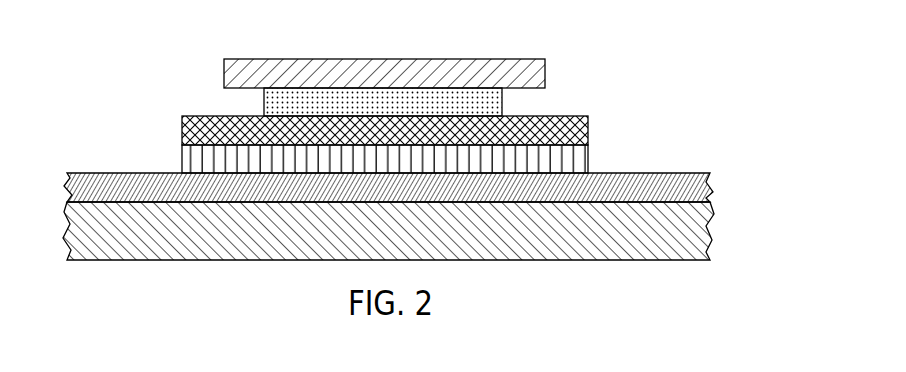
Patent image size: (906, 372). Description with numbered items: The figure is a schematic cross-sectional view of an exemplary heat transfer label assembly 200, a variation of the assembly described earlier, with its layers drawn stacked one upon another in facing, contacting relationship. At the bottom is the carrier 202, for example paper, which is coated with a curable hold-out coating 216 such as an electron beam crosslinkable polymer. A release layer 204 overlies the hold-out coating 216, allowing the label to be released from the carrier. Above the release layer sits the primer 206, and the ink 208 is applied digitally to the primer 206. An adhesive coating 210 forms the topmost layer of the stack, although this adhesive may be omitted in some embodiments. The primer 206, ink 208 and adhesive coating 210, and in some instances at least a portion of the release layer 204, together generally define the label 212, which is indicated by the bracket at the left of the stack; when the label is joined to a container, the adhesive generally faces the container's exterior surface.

The heat transfer label assembly 200 is at (657, 53).
The carrier 202 is at (712, 228).
The release layer 204 is at (589, 160).
The primer layer 206 is at (589, 130).
The ink 208 is at (503, 101).
The adhesive coating 210 is at (546, 70).
The label 212 is at (55, 57).
The hold-out coating 216 is at (711, 190).